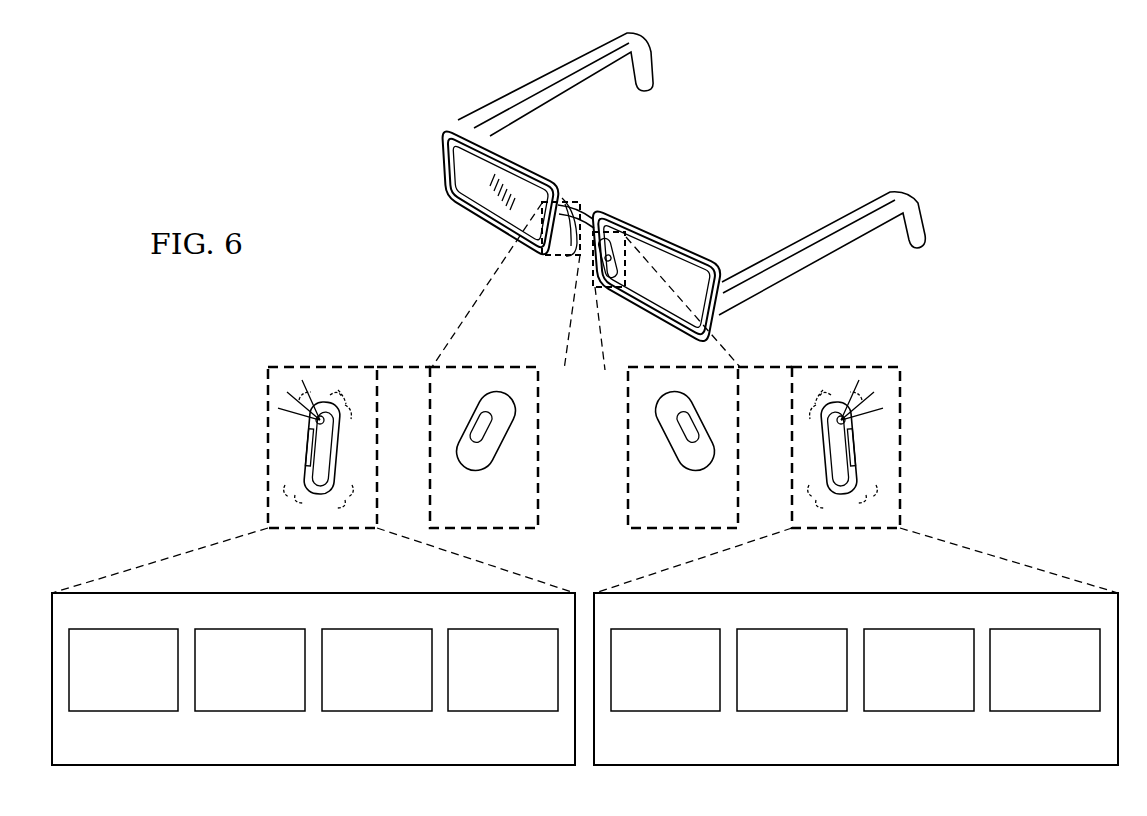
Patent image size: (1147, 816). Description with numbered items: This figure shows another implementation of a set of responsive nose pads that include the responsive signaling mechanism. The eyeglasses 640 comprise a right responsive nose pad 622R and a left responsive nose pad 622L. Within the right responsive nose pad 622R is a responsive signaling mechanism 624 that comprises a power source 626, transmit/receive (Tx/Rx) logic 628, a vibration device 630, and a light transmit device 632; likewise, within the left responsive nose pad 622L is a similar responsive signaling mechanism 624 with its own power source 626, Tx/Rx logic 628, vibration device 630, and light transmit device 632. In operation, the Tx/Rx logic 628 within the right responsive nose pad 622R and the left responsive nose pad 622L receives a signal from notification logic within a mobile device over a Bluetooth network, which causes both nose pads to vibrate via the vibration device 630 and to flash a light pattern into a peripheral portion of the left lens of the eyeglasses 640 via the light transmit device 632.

The eyeglasses 640 is at (488, 78).
The right responsive nose pad 622R is at (478, 478).
The left responsive nose pad 622L is at (690, 478).
The responsive signaling mechanism 624 is at (282, 590).
The power source 626 is at (122, 711).
The Tx/Rx logic 628 is at (248, 711).
The vibration device 630 is at (374, 711).
The light transmit device 632 is at (500, 711).